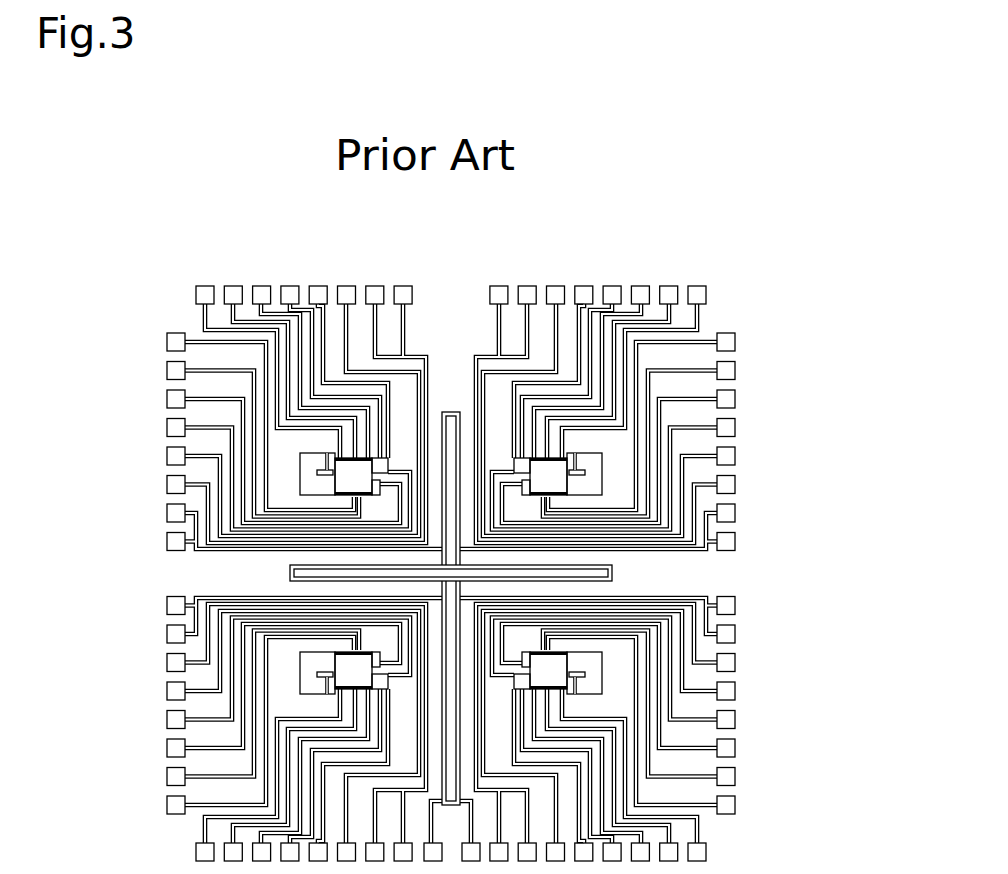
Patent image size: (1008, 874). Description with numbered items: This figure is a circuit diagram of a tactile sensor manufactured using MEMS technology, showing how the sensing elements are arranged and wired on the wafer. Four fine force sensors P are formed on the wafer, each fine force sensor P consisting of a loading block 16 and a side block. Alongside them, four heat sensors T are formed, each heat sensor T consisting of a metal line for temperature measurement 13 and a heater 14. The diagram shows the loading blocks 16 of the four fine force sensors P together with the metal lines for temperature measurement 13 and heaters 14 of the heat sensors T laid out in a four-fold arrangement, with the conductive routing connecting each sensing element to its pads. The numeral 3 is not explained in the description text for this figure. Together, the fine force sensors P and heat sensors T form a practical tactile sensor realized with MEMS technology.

The prior art TAB tape / film carrier 3 is at (464, 573).
The fine force sensor P is at (158, 348).
The loading block 16 is at (350, 478).
The metal line for temperature measurement 13 is at (693, 549).
The heater 14 is at (612, 571).
The heat sensor T is at (582, 627).